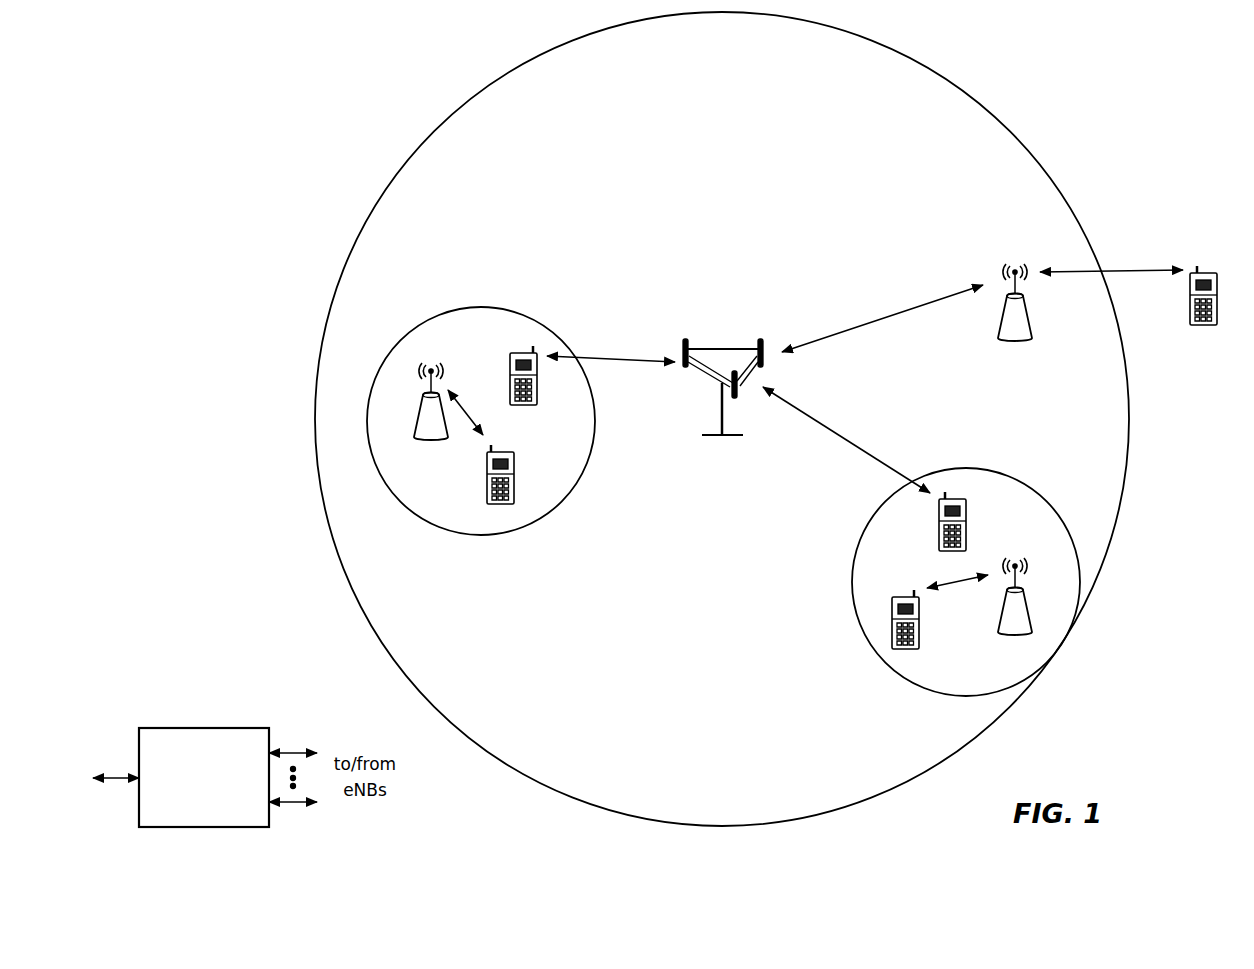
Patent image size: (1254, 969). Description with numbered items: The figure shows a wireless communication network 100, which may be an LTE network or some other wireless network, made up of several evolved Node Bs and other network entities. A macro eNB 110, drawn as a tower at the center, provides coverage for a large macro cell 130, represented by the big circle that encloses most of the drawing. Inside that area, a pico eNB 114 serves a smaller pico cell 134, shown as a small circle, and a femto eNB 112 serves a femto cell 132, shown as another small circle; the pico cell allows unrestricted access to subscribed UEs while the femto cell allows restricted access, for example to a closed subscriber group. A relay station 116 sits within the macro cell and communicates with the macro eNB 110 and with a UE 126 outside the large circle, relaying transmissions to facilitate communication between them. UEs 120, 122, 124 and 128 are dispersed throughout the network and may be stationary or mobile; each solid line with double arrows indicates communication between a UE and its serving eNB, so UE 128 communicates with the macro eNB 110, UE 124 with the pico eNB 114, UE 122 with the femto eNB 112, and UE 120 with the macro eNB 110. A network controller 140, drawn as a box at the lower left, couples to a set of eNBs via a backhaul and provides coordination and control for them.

The wireless communication network 100 is at (328, 78).
The macro eNB 110 is at (717, 348).
The femto eNB 112 is at (1031, 616).
The pico eNB 114 is at (415, 421).
The relay station 116 is at (1031, 323).
The UE 120 is at (968, 510).
The UE 122 is at (891, 607).
The UE 124 is at (515, 461).
The UE 126 is at (1219, 283).
The UE 128 is at (509, 362).
The macro cell 130 is at (988, 108).
The femto cell 132 is at (1016, 477).
The pico cell 134 is at (476, 305).
The network controller 140 is at (198, 727).